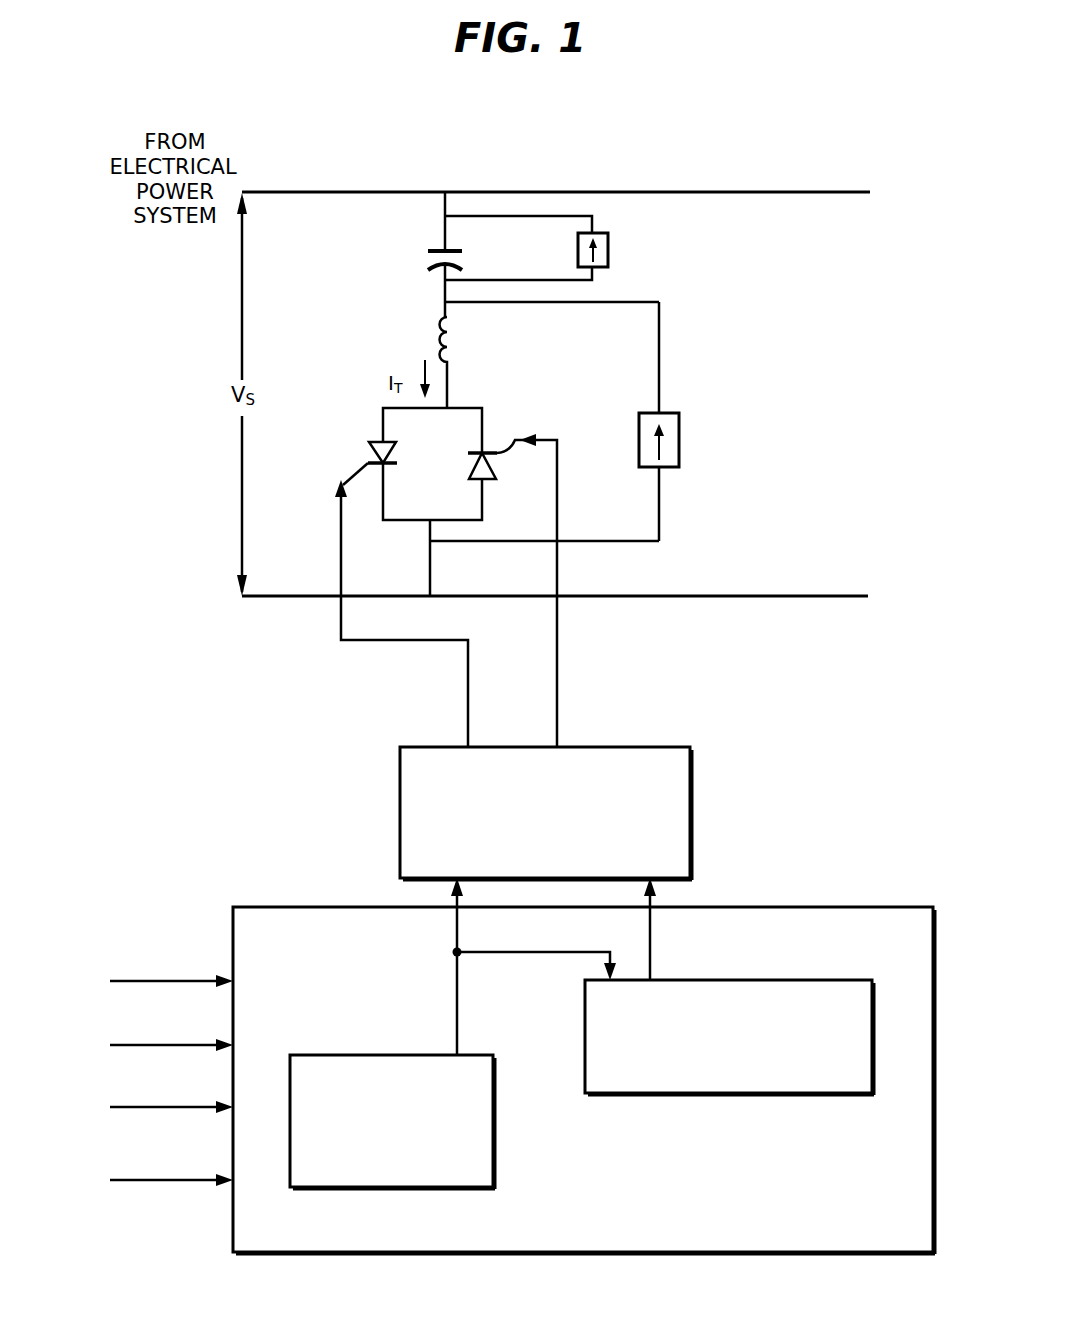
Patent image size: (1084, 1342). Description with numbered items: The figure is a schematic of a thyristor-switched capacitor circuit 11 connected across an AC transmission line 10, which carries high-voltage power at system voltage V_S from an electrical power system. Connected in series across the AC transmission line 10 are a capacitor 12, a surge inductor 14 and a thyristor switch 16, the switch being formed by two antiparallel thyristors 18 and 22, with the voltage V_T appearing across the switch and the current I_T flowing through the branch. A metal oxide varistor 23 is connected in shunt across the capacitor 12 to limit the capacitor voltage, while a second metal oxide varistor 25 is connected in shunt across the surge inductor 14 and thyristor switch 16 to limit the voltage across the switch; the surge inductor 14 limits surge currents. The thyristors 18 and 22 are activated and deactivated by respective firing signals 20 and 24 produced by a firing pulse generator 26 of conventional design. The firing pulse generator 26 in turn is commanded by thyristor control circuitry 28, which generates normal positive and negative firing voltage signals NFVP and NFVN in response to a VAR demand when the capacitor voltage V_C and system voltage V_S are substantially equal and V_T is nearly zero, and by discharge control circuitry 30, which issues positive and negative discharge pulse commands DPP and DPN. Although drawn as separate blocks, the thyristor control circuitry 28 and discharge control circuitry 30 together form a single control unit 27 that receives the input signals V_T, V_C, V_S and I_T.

The AC transmission line 10 is at (612, 192).
The thyristor-switched capacitor circuit 11 is at (745, 300).
The capacitor 12 is at (462, 247).
The surge inductor 14 is at (455, 335).
The thyristor switch 16 is at (493, 414).
The thyristor 18 is at (370, 447).
The firing signal 20 is at (341, 530).
The thyristor 22 is at (498, 470).
The metal oxide varistor 23 is at (610, 248).
The firing signal 24 is at (558, 502).
The metal oxide varistor 25 is at (682, 440).
The firing pulse generator 26 is at (692, 782).
The control unit 27 is at (507, 1066).
The thyristor control circuitry 28 is at (495, 1135).
The discharge control circuitry 30 is at (804, 980).